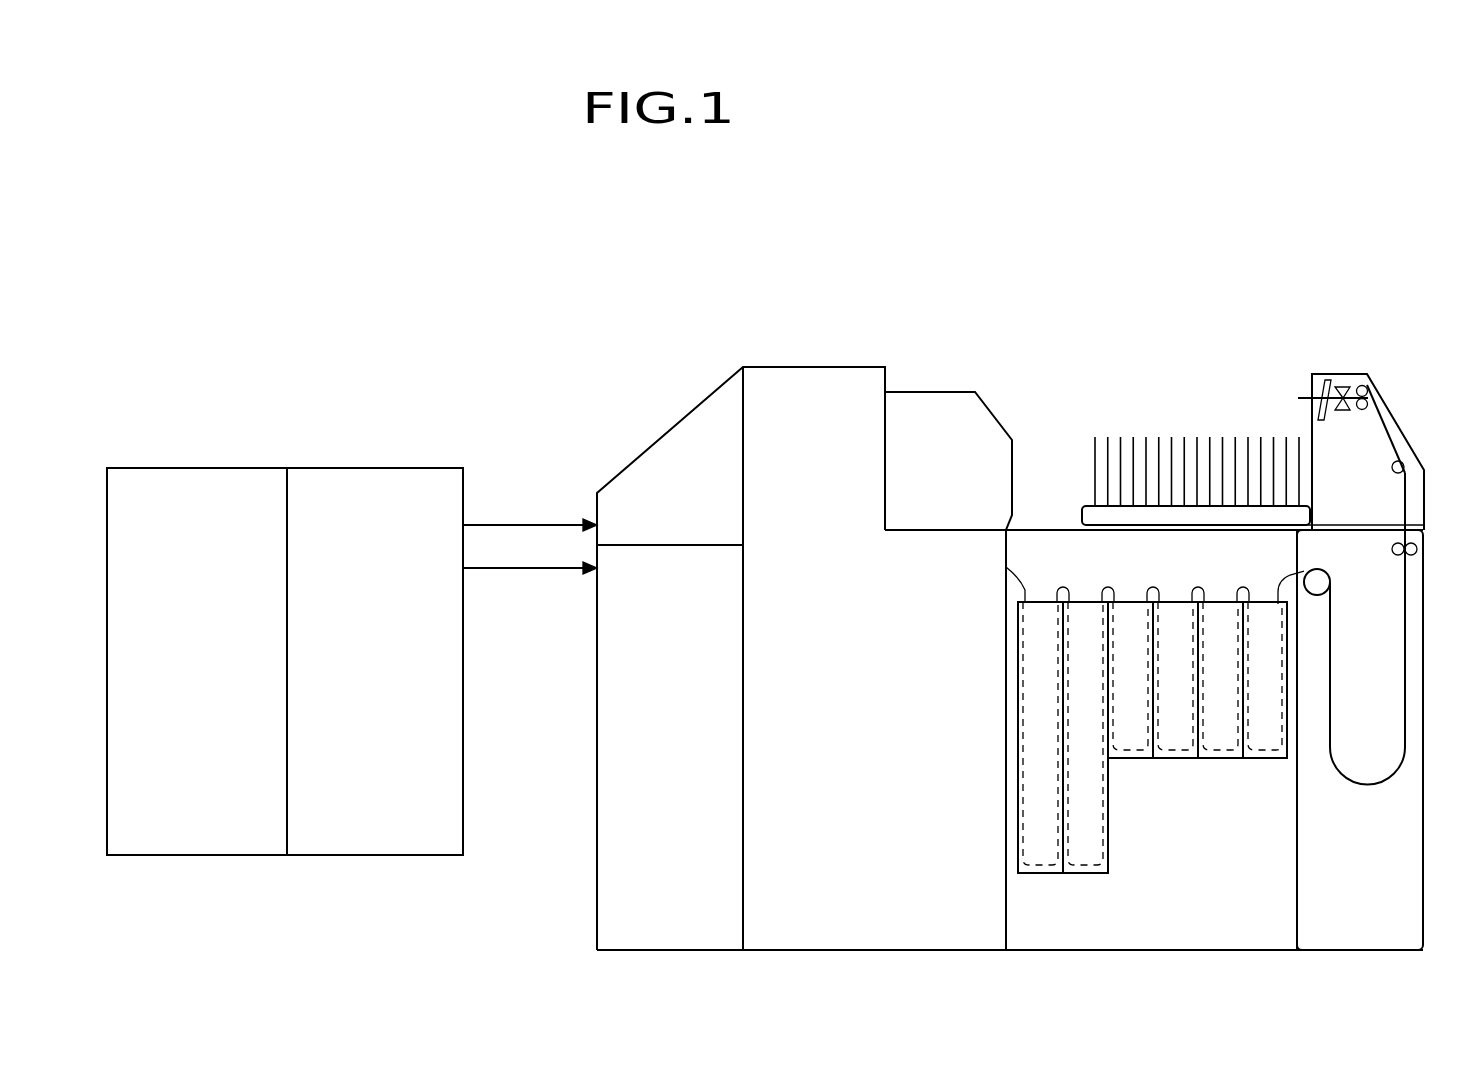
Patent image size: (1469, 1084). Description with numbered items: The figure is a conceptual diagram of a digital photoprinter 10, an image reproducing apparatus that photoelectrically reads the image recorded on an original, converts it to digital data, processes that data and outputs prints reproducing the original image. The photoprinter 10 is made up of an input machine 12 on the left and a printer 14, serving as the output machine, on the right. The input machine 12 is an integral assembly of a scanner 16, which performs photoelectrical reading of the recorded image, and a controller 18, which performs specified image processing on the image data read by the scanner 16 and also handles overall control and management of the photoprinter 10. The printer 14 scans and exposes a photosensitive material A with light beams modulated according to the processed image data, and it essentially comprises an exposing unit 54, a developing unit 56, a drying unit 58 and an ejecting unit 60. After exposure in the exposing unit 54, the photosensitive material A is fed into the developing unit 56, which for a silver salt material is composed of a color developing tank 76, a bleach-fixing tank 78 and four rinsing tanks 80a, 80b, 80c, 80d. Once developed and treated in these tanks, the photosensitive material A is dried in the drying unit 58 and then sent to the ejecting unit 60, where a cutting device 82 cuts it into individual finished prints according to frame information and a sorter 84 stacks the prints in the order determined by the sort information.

The digital photoprinter 10 is at (1326, 264).
The input machine 12 is at (388, 393).
The printer 14 is at (1049, 291).
The scanner 16 is at (186, 667).
The controller 18 is at (359, 667).
The exposing unit 54 is at (629, 377).
The developing unit 56 is at (1231, 924).
The drying unit 58 is at (1347, 914).
The ejecting unit 60 is at (1215, 351).
The color developing tank 76 is at (1045, 873).
The bleach-fixing tank 78 is at (1108, 862).
The rinsing tank 80a is at (1140, 758).
The rinsing tank 80b is at (1172, 602).
The rinsing tank 80c is at (1232, 758).
The rinsing tank 80d is at (1262, 602).
The cutting device 82 is at (1400, 435).
The sorter 84 is at (1145, 432).
The photosensitive material A is at (1332, 673).